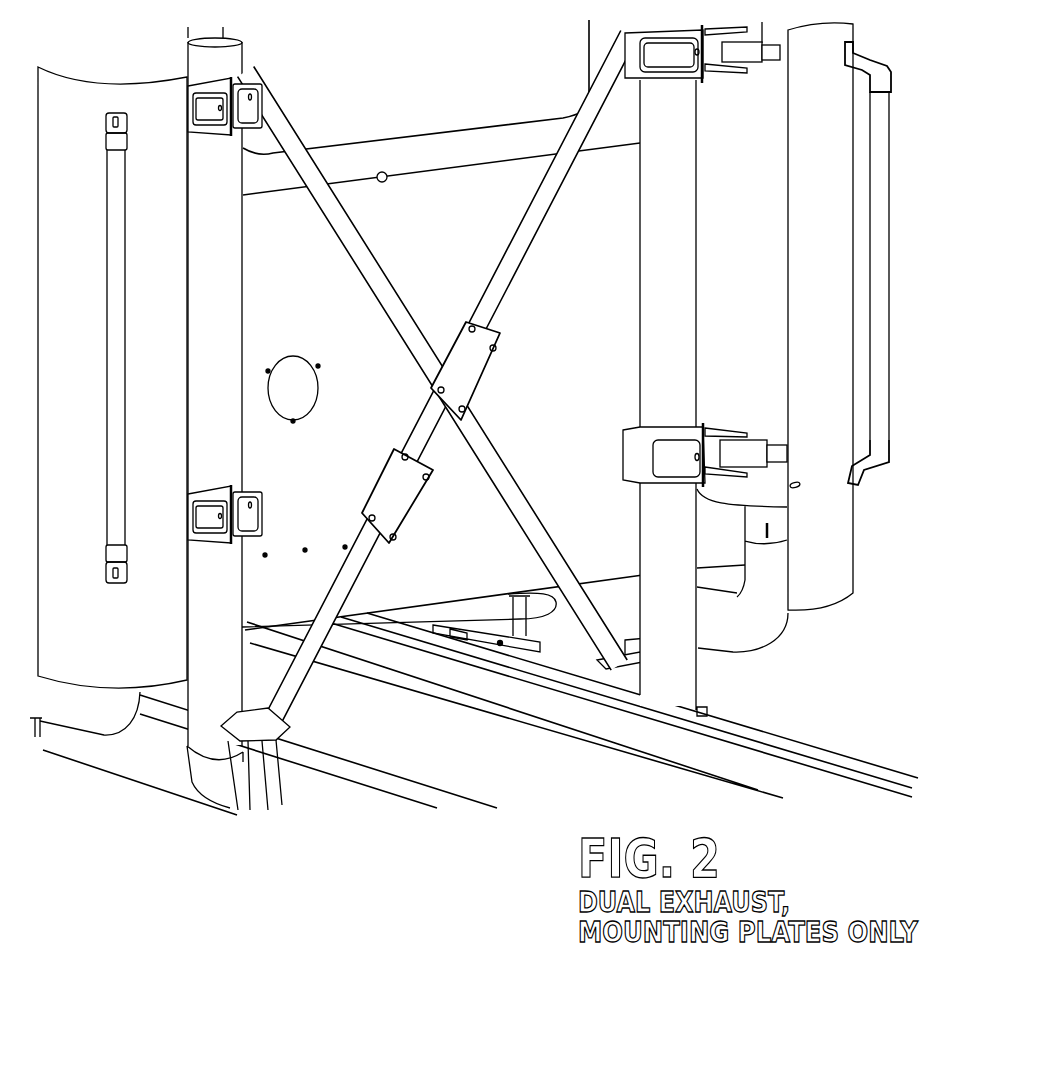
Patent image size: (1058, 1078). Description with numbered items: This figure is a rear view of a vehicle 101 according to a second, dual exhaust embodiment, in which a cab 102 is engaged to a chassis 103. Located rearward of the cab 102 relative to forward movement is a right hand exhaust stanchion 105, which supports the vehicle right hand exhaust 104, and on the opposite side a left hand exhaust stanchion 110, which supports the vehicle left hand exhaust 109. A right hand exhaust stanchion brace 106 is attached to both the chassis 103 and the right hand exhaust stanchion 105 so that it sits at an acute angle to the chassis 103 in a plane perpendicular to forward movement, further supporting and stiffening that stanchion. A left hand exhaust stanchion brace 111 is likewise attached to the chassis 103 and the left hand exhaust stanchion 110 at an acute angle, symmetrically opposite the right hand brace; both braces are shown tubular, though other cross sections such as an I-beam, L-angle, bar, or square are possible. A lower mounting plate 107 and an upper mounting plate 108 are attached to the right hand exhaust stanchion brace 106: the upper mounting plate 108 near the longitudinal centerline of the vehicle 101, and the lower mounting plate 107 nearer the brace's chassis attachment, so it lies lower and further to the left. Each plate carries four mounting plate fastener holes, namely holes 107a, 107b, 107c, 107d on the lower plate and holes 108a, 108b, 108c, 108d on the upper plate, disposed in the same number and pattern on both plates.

The vehicle 101 is at (532, 195).
The cab 102 is at (507, 235).
The chassis 103 is at (518, 695).
The vehicle right hand exhaust 104 is at (748, 283).
The right hand exhaust stanchion 105 is at (640, 290).
The right hand exhaust stanchion brace 106 is at (493, 283).
The lower mounting plate 107 is at (488, 515).
The mounting plate fastener hole 107a is at (410, 456).
The mounting plate fastener hole 107b is at (431, 477).
The mounting plate fastener hole 107c is at (378, 519).
The mounting plate fastener hole 107d is at (398, 537).
The upper mounting plate 108 is at (535, 361).
The mounting plate fastener hole 108a is at (476, 328).
The mounting plate fastener hole 108b is at (498, 348).
The mounting plate fastener hole 108c is at (447, 392).
The mounting plate fastener hole 108d is at (468, 409).
The vehicle left hand exhaust 109 is at (190, 367).
The left hand exhaust stanchion 110 is at (213, 458).
The left hand exhaust stanchion brace 111 is at (403, 340).